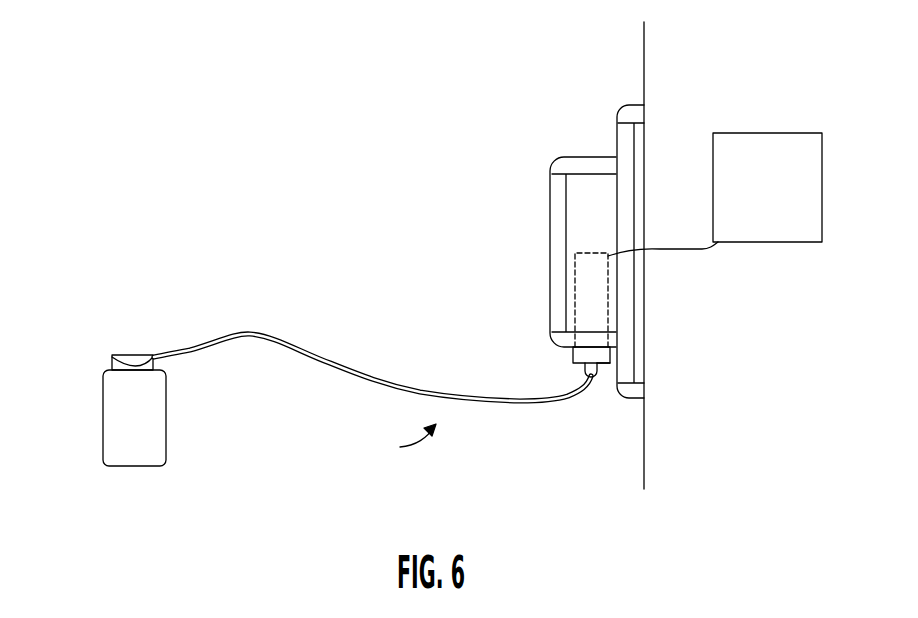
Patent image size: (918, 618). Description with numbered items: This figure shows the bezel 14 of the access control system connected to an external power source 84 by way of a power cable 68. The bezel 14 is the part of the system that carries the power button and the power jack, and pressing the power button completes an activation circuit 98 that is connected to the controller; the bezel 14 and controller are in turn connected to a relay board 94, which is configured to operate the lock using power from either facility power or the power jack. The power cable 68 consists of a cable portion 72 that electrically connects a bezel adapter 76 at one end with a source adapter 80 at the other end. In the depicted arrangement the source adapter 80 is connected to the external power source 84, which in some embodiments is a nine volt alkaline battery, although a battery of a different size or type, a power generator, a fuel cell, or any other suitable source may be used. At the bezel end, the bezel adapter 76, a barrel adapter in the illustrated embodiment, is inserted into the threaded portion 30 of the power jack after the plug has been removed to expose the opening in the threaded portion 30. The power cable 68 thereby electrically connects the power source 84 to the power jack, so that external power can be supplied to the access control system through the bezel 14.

The bezel 14 is at (563, 157).
The threaded portion 30 is at (605, 367).
The power cable 68 is at (403, 444).
The cable portion 72 is at (382, 378).
The bezel adapter 76 is at (584, 371).
The source adapter 80 is at (113, 353).
The external power source 84 is at (103, 428).
The relay board 94 is at (779, 202).
The activation circuit 98 is at (671, 250).